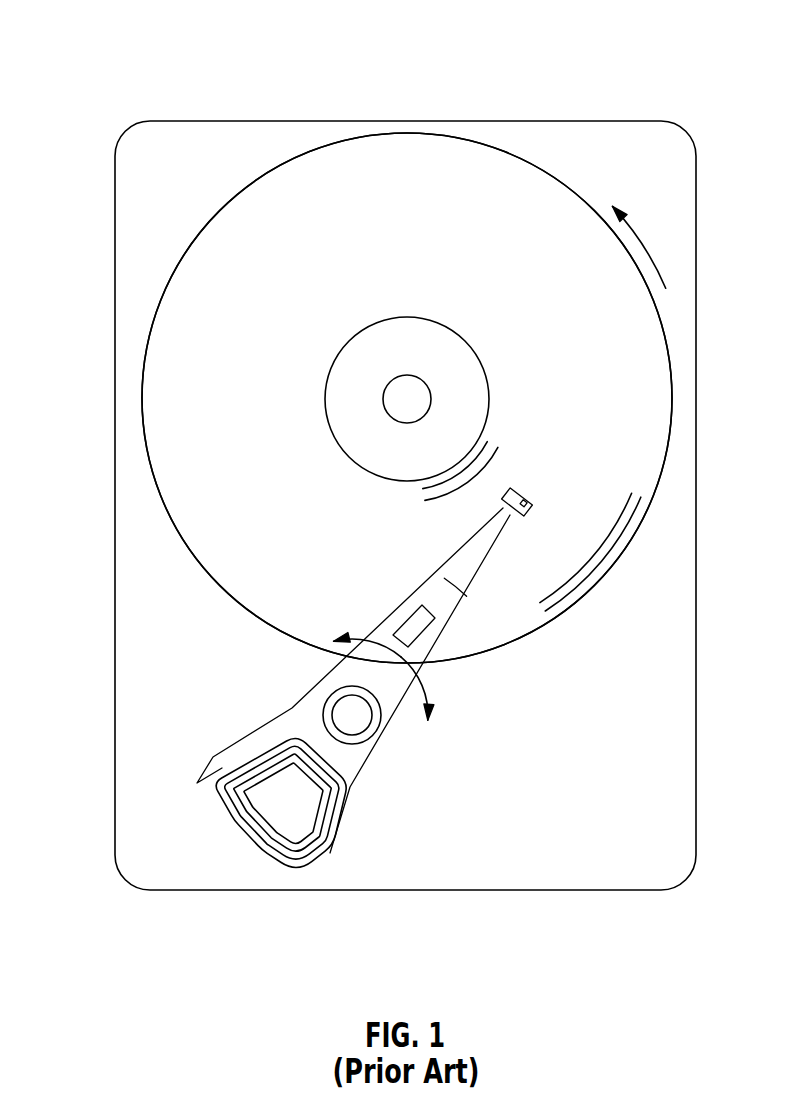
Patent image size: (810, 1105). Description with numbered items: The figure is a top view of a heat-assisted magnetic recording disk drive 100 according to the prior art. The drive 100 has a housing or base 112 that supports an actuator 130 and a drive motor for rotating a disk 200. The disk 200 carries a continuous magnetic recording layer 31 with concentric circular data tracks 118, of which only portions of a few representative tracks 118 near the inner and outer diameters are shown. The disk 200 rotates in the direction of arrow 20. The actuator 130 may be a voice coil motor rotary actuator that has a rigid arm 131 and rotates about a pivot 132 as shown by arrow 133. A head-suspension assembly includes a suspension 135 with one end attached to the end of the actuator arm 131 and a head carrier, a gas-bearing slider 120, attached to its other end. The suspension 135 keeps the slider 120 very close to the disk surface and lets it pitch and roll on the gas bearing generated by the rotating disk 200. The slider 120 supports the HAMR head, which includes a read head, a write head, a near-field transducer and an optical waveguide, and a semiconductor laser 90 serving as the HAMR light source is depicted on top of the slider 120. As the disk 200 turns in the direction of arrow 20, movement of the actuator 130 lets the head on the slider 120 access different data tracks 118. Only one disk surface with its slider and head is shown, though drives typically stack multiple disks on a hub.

The HAMR disk drive 100 is at (114, 41).
The housing or base 112 is at (627, 122).
The disk 200 is at (267, 177).
The continuous magnetic recording layer 31 is at (648, 364).
The arrow 20 is at (636, 227).
The concentric circular data tracks 118 is at (416, 484).
The semiconductor laser 90 is at (524, 502).
The gas-bearing slider 120 is at (523, 512).
The suspension 135 is at (447, 563).
The rigid arm 131 is at (392, 613).
The arrow 133 is at (428, 690).
The pivot 132 is at (342, 710).
The actuator 130 is at (200, 764).